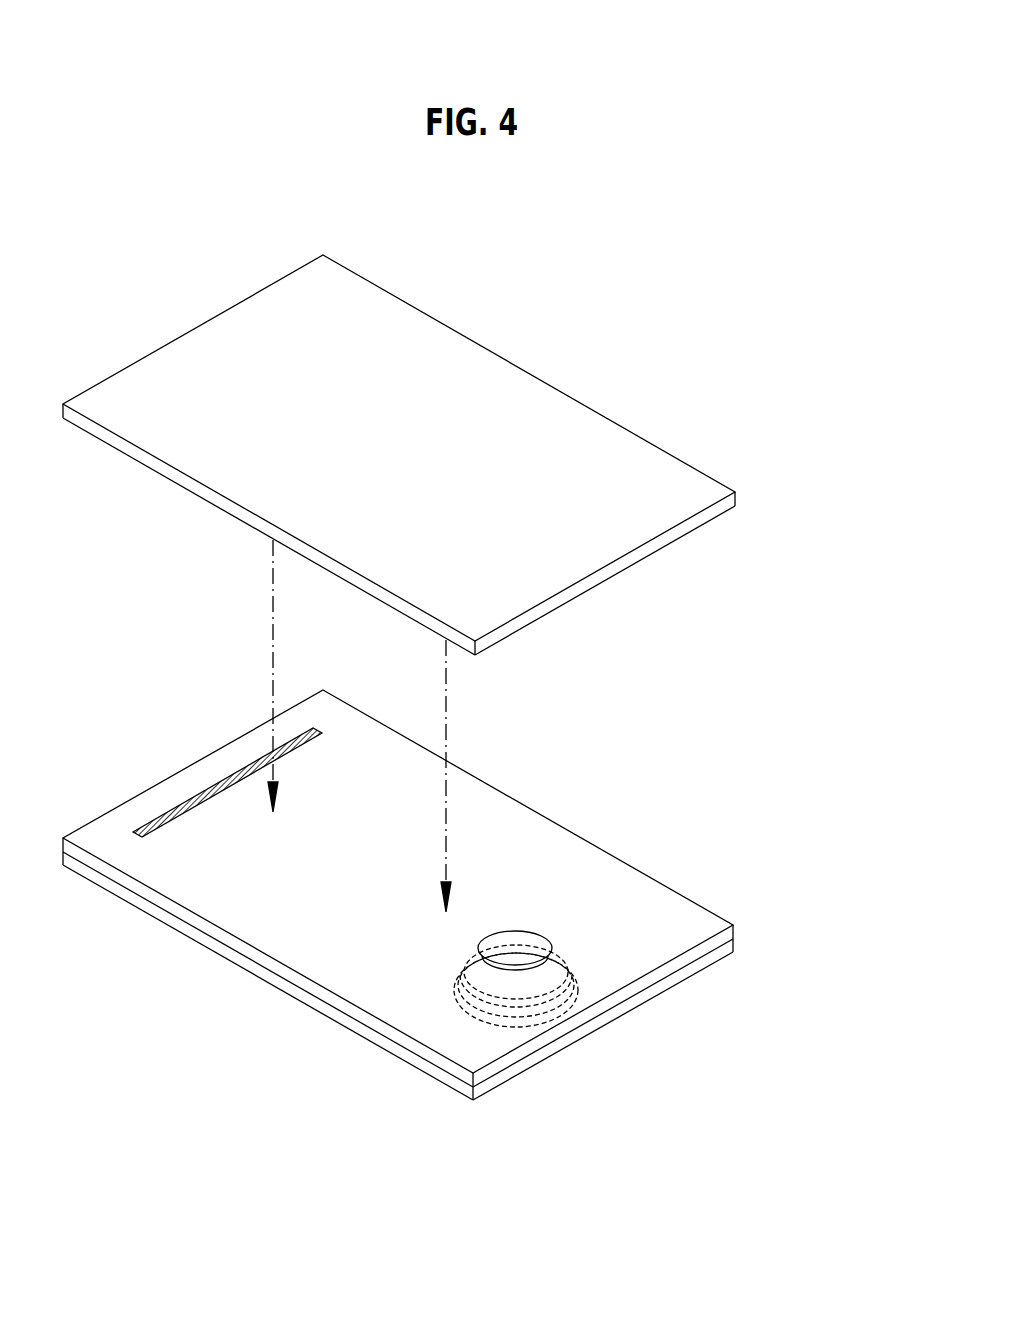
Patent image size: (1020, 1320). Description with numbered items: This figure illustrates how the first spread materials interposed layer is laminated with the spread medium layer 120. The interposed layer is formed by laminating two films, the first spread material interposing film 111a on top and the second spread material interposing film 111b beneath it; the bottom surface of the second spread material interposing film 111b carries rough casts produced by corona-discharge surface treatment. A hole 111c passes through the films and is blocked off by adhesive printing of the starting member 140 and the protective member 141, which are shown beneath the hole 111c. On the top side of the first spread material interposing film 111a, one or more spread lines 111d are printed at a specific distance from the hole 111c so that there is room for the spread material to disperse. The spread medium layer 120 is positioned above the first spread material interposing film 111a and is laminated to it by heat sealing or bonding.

The spread medium layer 120 is at (736, 501).
The first spread material interposing film 111a is at (736, 931).
The second spread material interposing film 111b is at (736, 952).
The hole 111c is at (515, 947).
The spread line 111d is at (200, 795).
The starting member 140 is at (538, 1010).
The protective member 141 is at (525, 1030).